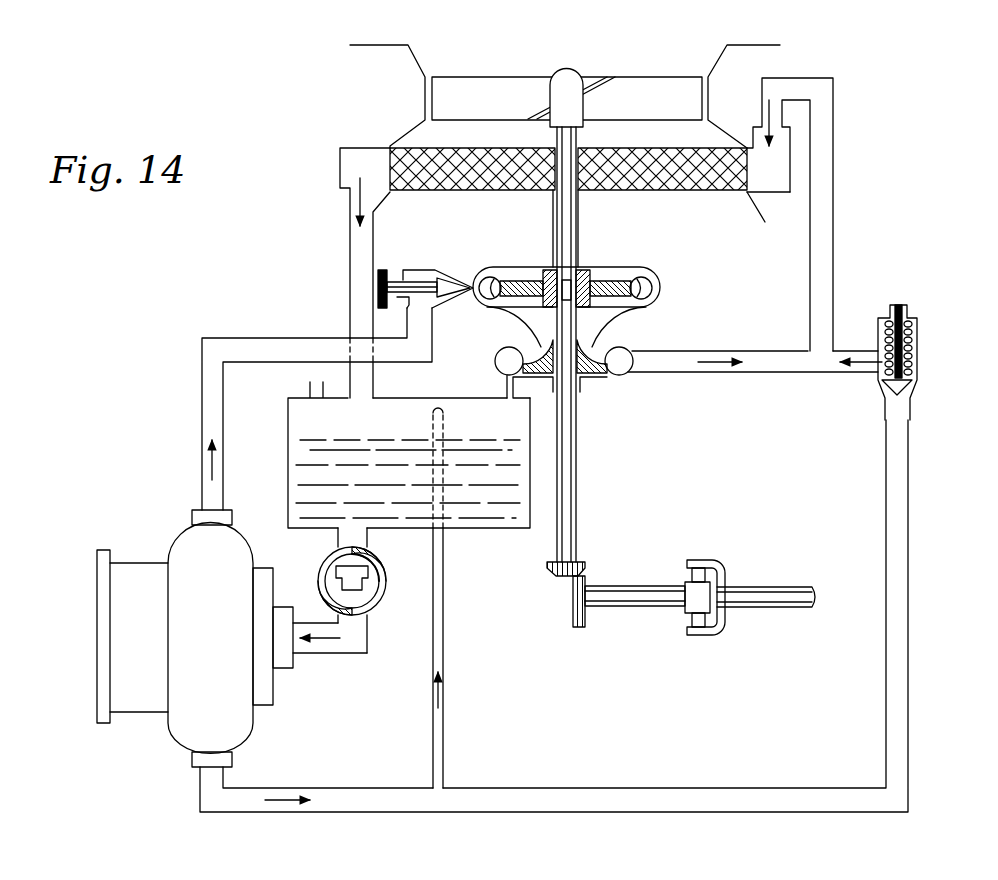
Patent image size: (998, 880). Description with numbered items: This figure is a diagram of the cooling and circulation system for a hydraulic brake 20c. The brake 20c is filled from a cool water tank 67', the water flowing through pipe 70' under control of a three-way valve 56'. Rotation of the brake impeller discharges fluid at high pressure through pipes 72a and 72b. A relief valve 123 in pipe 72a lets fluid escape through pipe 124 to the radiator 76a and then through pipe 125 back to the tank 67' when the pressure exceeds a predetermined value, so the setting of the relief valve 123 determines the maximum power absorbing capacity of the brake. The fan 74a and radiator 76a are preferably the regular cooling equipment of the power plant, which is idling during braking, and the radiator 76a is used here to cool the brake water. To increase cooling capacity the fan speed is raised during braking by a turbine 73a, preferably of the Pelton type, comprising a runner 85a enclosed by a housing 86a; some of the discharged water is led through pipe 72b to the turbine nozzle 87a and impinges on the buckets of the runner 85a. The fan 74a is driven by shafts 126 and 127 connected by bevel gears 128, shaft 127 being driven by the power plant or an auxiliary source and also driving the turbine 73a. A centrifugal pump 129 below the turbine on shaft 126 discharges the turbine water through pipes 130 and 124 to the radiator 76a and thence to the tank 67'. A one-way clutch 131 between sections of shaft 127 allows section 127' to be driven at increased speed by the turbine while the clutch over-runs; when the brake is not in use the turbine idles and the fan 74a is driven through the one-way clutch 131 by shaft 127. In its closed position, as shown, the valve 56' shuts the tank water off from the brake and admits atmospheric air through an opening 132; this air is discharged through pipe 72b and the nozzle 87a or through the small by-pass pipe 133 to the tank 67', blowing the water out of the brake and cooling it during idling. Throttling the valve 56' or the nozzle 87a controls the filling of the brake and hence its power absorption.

The fan 74a is at (650, 78).
The radiator 76a is at (693, 192).
The pipe 125 is at (348, 280).
The pipe 124 is at (834, 185).
The shaft 126 is at (578, 462).
The housing 86a is at (532, 265).
The runner 85a is at (490, 276).
The turbine 73a is at (620, 274).
The turbine nozzle 87a is at (440, 268).
The centrifugal pump 129 is at (592, 374).
The pipe 130 is at (742, 372).
The relief valve 123 is at (918, 355).
The pipe 72a is at (375, 812).
The by-pass pipe 133 is at (450, 740).
The cool water tank 67' is at (409, 480).
The opening 132 is at (388, 582).
The 3-way valve 56' is at (390, 556).
The pipe 70' is at (333, 664).
The pipe 72b is at (200, 440).
The brake 20c is at (170, 738).
The bevel gears 128 is at (562, 578).
The section of shaft 127' is at (635, 620).
The one-way clutch 131 is at (700, 556).
The shaft 127 is at (766, 620).